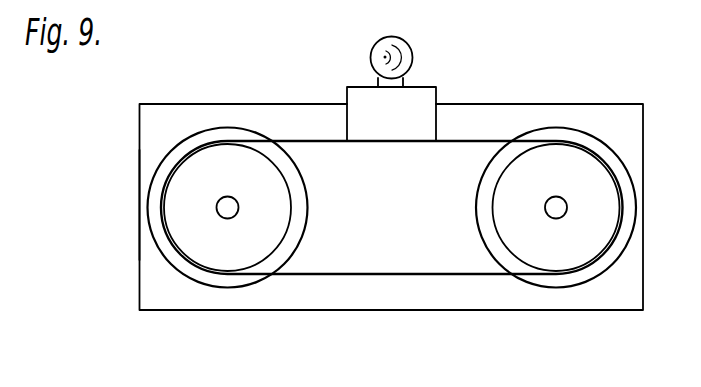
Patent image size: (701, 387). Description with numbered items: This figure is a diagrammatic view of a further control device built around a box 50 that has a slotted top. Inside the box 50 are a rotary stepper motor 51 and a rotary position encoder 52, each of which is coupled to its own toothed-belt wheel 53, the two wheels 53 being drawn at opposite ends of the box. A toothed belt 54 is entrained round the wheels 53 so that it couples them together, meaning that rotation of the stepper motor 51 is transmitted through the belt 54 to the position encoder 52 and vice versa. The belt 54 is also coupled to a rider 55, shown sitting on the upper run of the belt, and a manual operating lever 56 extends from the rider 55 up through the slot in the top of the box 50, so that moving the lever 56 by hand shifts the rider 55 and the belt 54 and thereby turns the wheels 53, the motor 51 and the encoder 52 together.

The box 50 is at (610, 114).
The rotary stepper motor 51 is at (140, 207).
The rotary position encoder 52 is at (616, 268).
The toothed-belt wheel 53 is at (228, 158).
The toothed belt 54 is at (372, 278).
The rider 55 is at (423, 103).
The manual operating lever 56 is at (403, 46).